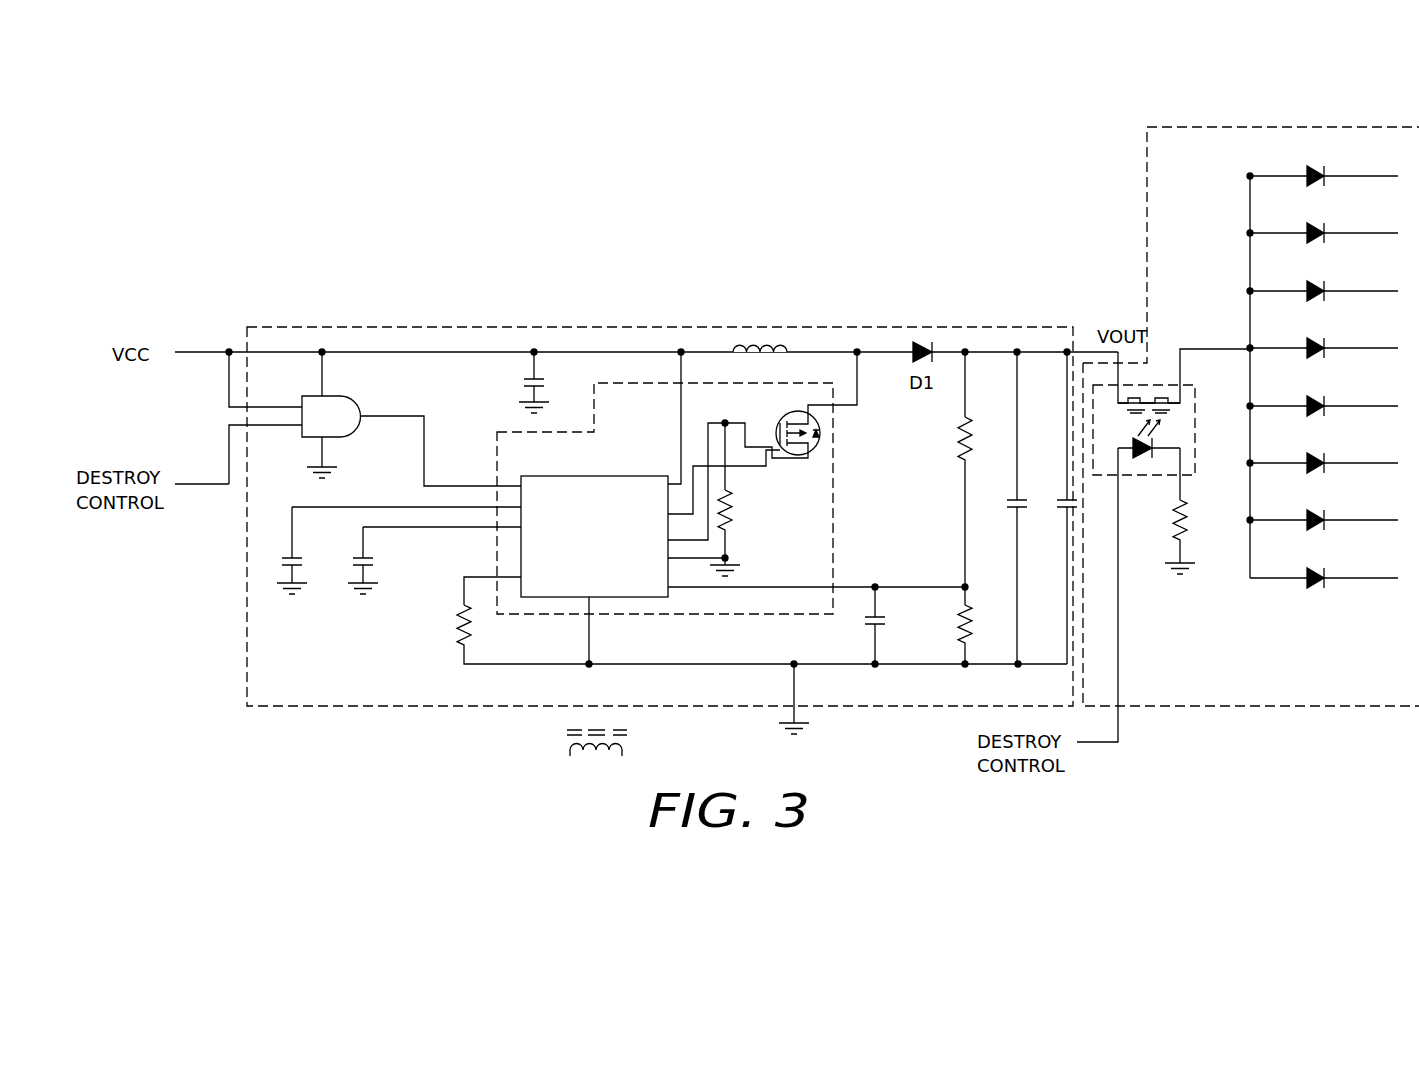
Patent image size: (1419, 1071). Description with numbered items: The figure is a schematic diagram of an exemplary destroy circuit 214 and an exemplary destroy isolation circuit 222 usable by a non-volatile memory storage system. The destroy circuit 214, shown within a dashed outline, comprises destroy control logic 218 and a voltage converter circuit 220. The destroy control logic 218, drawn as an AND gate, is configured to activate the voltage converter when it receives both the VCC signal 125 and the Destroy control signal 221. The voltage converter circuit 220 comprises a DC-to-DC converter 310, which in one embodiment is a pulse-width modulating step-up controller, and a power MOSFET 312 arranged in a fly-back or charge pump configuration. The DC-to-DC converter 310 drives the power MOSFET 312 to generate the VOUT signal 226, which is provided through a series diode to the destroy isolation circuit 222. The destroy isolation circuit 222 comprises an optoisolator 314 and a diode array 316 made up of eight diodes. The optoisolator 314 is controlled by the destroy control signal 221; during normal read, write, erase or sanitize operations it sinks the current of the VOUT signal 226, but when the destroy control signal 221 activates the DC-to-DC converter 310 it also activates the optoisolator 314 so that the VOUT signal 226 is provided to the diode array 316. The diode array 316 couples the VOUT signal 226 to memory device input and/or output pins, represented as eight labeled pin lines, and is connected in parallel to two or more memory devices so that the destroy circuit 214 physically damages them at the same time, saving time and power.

The VCC signal 125 is at (206, 352).
The destroy circuit 214 is at (261, 328).
The destroy control logic 218 is at (358, 395).
The destroy control signal 221 is at (217, 489).
The voltage converter circuit 220 is at (497, 447).
The DC-to-DC converter 310 is at (582, 476).
The power MOSFET 312 is at (778, 416).
The optoisolator 314 is at (1195, 463).
The diode array 316 is at (1243, 230).
The destroy isolation circuit 222 is at (1147, 172).
The VOUT signal 226 is at (1082, 348).